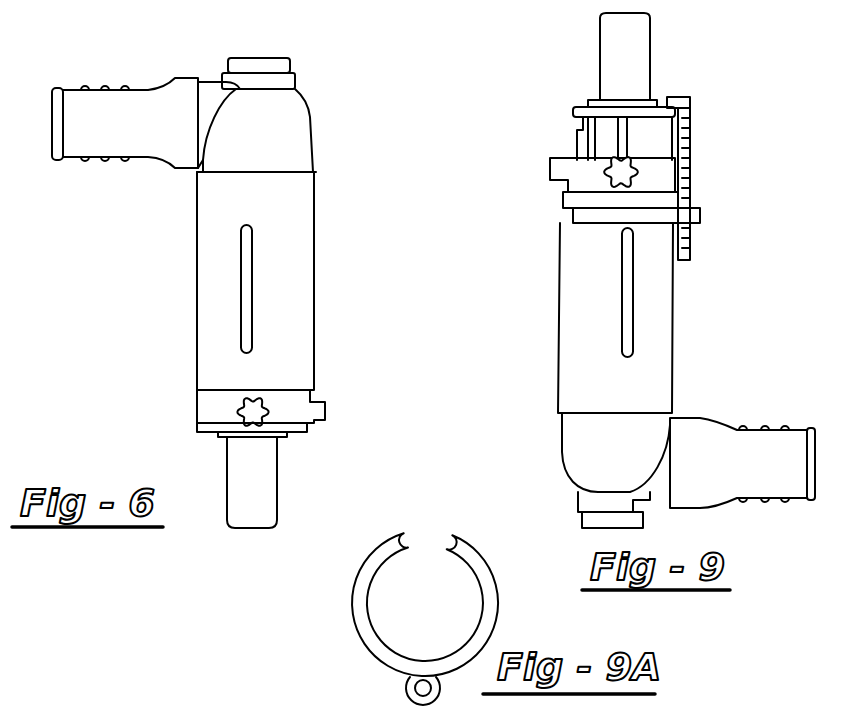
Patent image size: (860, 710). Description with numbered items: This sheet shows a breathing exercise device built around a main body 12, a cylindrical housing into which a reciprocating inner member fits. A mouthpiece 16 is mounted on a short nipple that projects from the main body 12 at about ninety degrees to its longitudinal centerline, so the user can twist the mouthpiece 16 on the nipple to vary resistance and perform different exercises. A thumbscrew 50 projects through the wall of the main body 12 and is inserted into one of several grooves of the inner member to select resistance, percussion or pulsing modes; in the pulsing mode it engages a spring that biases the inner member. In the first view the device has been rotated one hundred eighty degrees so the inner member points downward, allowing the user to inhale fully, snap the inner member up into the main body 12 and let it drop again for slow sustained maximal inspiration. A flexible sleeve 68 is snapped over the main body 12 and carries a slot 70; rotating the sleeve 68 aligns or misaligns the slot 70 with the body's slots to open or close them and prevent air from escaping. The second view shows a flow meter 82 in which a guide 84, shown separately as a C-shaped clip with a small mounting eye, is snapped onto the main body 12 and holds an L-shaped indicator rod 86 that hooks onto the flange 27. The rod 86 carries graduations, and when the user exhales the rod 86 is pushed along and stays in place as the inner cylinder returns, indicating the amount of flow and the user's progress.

In FIG. 6, the main body 12 is at (290, 142).
In FIG. 9, the main body 12 is at (572, 440).
In FIG. 6, the mouthpiece 16 is at (102, 108).
In FIG. 9, the mouthpiece 16 is at (748, 462).
In FIG. 6, the flange 27 is at (203, 427).
In FIG. 9, the flange 27 is at (580, 107).
In FIG. 6, the thumbscrew 50 is at (253, 396).
In FIG. 9, the flexible sleeve 68 is at (583, 317).
In FIG. 6, the slot 70 is at (240, 278).
In FIG. 9, the flow meter 82 is at (703, 162).
In FIG. 9, the guide 84 is at (575, 215).
In FIG. 9A, the guide 84 is at (362, 567).
In FIG. 9, the indicator rod 86 is at (690, 105).